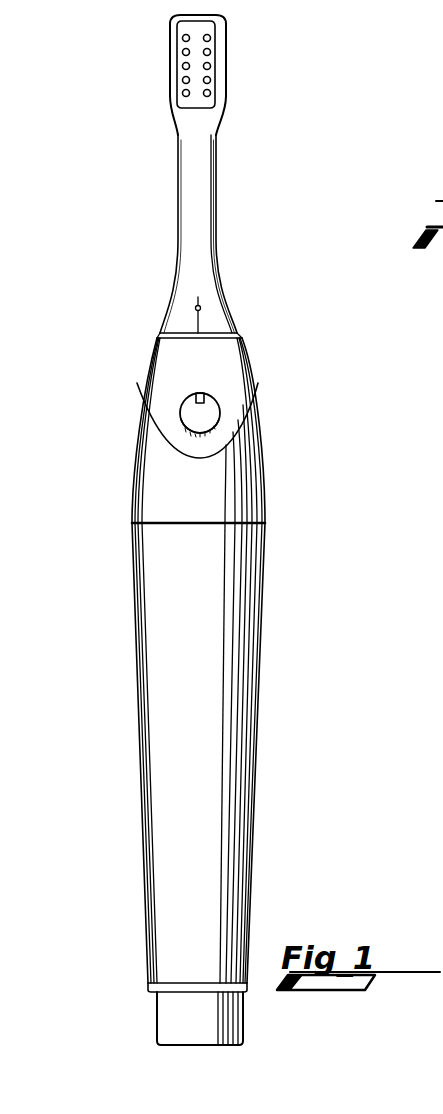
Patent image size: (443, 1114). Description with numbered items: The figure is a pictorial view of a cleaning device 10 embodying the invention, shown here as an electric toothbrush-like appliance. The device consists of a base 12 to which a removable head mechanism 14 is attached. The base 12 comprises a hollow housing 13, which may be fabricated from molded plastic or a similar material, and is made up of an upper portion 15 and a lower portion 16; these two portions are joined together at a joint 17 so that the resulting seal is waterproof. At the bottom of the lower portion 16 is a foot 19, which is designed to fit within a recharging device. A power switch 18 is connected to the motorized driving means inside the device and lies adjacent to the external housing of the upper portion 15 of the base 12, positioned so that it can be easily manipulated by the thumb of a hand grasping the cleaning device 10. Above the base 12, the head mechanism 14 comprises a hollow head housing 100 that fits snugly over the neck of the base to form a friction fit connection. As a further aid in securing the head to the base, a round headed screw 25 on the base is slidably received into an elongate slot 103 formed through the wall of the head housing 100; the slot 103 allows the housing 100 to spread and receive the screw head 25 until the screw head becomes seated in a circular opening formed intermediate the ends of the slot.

The cleaning device 10 is at (74, 487).
The base 12 is at (130, 651).
The hollow housing 13 is at (264, 490).
The head mechanism 14 is at (172, 193).
The upper portion 15 is at (262, 413).
The lower portion 16 is at (165, 742).
The joint 17 is at (133, 523).
The power switch 18 is at (190, 408).
The foot 19 is at (175, 1015).
The round headed screw 25 is at (196, 312).
The head housing 100 is at (215, 173).
The elongate slot 103 is at (203, 323).